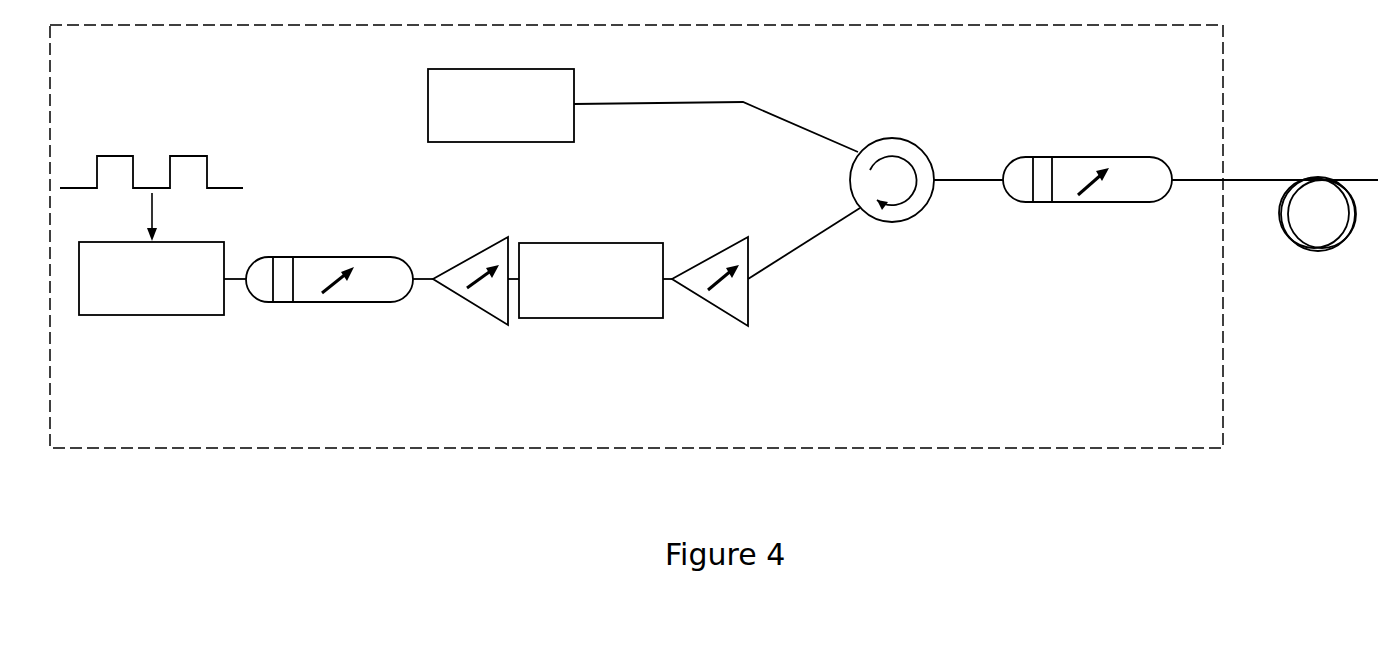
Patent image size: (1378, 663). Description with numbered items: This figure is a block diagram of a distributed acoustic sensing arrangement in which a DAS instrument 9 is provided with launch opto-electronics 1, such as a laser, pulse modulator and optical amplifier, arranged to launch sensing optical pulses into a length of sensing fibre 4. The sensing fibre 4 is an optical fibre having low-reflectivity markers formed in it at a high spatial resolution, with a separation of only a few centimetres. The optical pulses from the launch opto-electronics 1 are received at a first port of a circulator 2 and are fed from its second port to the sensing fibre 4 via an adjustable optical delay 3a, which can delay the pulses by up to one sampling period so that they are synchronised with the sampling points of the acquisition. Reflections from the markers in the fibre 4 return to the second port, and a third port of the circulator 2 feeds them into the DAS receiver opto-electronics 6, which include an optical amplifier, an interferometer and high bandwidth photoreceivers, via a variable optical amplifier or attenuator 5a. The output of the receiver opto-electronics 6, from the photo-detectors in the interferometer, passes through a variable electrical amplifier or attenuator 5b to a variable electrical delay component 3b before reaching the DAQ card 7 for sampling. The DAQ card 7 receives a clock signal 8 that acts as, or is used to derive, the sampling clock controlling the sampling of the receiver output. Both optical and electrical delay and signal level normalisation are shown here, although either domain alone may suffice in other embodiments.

The launch opto-electronics 1 is at (444, 133).
The circulator 2 is at (877, 208).
The adjustable optical delay 3a is at (1066, 198).
The variable electrical delay component 3b is at (308, 297).
The sensing fibre 4 is at (1298, 235).
The variable optical amplifier or attenuator 5a is at (720, 303).
The variable electrical amplifier or attenuator 5b is at (481, 302).
The DAS receiver opto-electronics 6 is at (532, 305).
The DAQ card 7 is at (103, 308).
The clock signal 8 is at (196, 165).
The DAS instrument 9 is at (1208, 447).